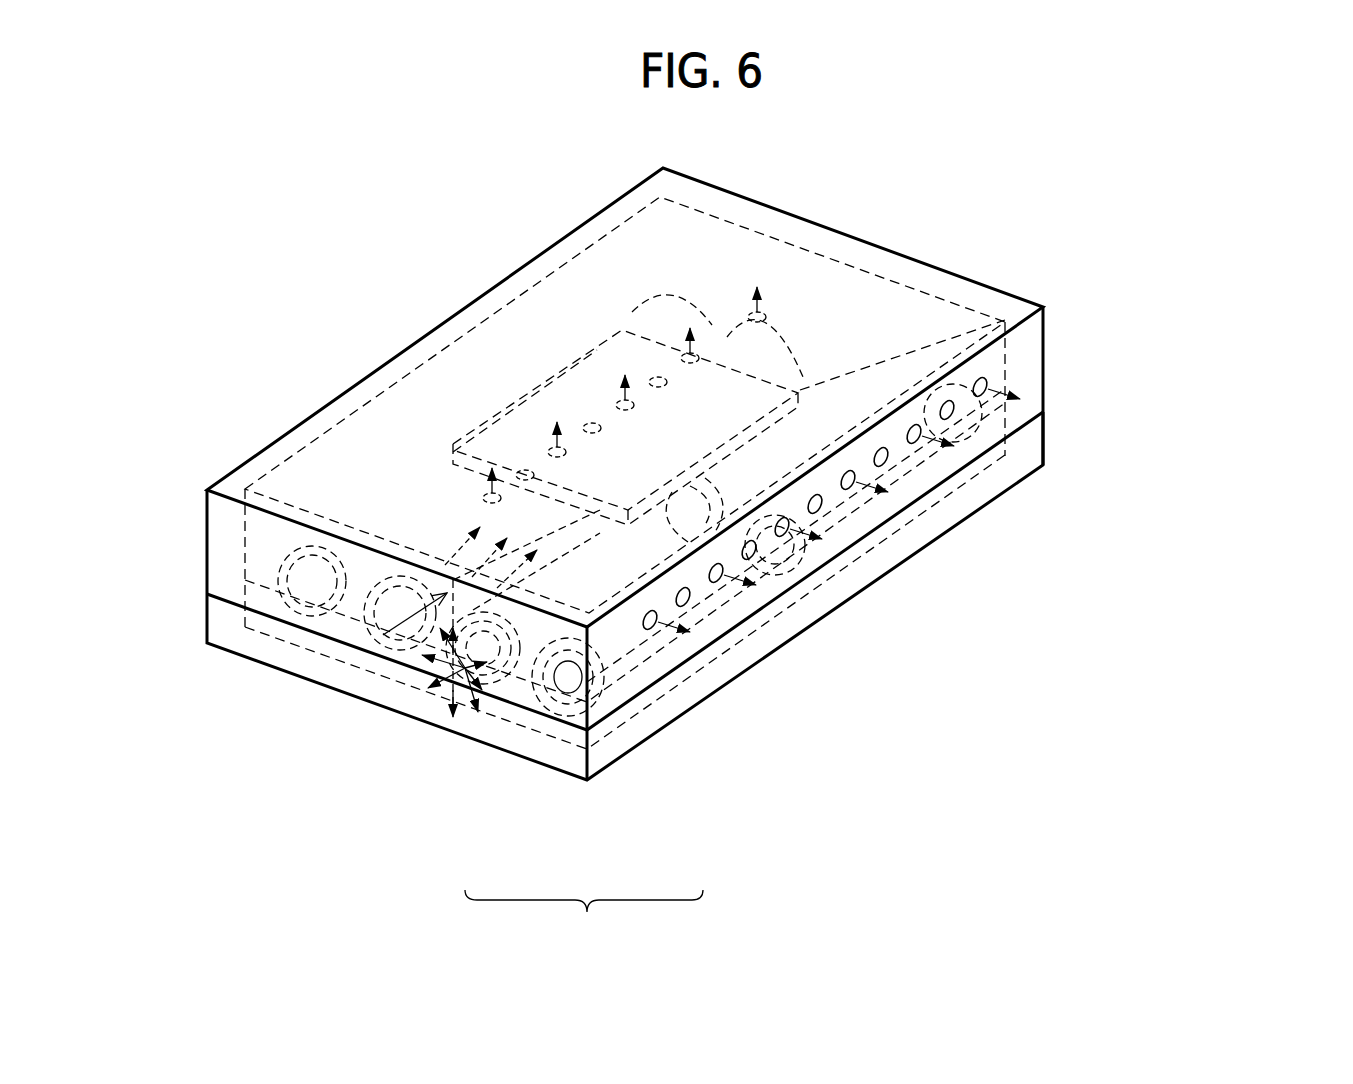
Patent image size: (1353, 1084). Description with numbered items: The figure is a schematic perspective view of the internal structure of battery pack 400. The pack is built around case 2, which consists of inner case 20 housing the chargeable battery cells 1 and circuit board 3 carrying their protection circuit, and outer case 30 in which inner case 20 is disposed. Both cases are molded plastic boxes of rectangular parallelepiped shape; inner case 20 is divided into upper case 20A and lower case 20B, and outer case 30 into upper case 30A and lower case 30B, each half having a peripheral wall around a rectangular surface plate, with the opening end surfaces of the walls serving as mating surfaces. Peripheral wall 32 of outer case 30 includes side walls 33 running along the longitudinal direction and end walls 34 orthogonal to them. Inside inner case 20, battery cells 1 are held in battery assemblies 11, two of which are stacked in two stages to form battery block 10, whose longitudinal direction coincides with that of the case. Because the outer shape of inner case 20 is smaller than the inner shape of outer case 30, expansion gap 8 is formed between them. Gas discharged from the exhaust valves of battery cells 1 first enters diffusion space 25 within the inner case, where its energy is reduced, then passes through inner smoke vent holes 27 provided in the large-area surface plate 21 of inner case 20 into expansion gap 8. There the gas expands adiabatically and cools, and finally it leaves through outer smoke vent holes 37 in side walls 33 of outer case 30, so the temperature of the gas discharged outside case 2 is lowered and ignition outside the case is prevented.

The battery pack 400 is at (360, 218).
The case 2 is at (1237, 270).
The outer case 30 is at (1172, 193).
The upper case of outer case 30A is at (940, 238).
The lower case of outer case 30B is at (1063, 432).
The inner case 20 is at (1172, 472).
The upper case of inner case 20A is at (1036, 470).
The lower case of inner case 20B is at (940, 533).
The surface plate 21 is at (742, 253).
The expansion gap 8 is at (228, 483).
The circuit board 3 is at (594, 342).
The inner smoke vent holes 27 is at (753, 310).
The outer smoke vent holes 37 is at (817, 497).
The battery assembly 11 is at (873, 537).
The battery block 10 is at (980, 667).
The side walls of outer case 33 is at (648, 657).
The end walls of outer case 34 is at (490, 698).
The peripheral wall of outer case 32 is at (584, 922).
The battery cell 1 is at (547, 690).
The diffusion space 25 is at (397, 627).